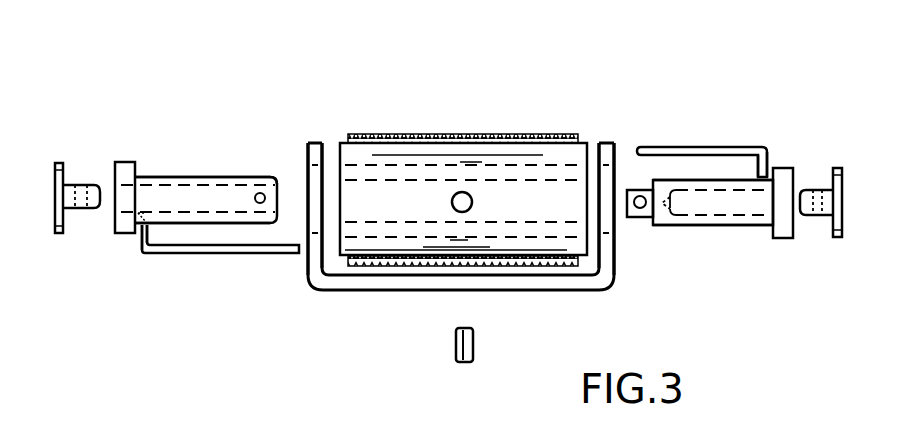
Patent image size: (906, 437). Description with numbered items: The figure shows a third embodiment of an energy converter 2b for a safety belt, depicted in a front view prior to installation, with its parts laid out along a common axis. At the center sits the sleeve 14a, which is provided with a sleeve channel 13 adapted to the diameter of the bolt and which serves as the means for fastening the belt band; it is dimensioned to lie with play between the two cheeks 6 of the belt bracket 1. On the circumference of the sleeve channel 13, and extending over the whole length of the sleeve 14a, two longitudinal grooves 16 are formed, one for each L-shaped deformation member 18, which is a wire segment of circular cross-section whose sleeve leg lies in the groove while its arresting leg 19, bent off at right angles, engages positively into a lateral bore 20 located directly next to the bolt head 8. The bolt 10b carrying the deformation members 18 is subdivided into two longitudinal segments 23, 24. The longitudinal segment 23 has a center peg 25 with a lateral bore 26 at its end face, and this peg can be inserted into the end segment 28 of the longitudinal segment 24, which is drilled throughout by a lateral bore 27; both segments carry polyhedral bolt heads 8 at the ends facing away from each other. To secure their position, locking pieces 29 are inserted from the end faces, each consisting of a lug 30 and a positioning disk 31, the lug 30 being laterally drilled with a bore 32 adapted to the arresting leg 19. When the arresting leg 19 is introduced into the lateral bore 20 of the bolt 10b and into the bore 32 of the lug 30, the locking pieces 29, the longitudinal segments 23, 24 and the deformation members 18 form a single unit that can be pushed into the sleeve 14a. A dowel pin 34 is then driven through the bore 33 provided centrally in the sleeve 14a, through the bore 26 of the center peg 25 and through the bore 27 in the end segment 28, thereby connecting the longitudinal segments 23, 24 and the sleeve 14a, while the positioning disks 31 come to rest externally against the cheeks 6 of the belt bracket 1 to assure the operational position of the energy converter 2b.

The belt bracket 1 is at (336, 298).
The energy converter 2b is at (470, 121).
The cheek 6 is at (318, 146).
The bolt head 8 is at (128, 166).
The bolt 10b is at (224, 152).
The sleeve channel 13 is at (397, 192).
The sleeve 14a is at (504, 164).
The longitudinal groove 16 is at (443, 170).
The deformation member 18 is at (224, 257).
The arresting leg 19 is at (142, 246).
The lateral bore 20 is at (138, 220).
The longitudinal segment 23 is at (733, 229).
The longitudinal segment 24 is at (192, 176).
The center peg 25 is at (637, 220).
The lateral bore 26 is at (642, 195).
The lateral bore 27 is at (258, 193).
The end segment 28 is at (280, 182).
The locking piece 29 is at (58, 152).
The lug 30 is at (90, 210).
The positioning disk 31 is at (62, 187).
The lateral bore 32 is at (80, 216).
The bore 33 is at (468, 210).
The dowel pin 34 is at (458, 348).